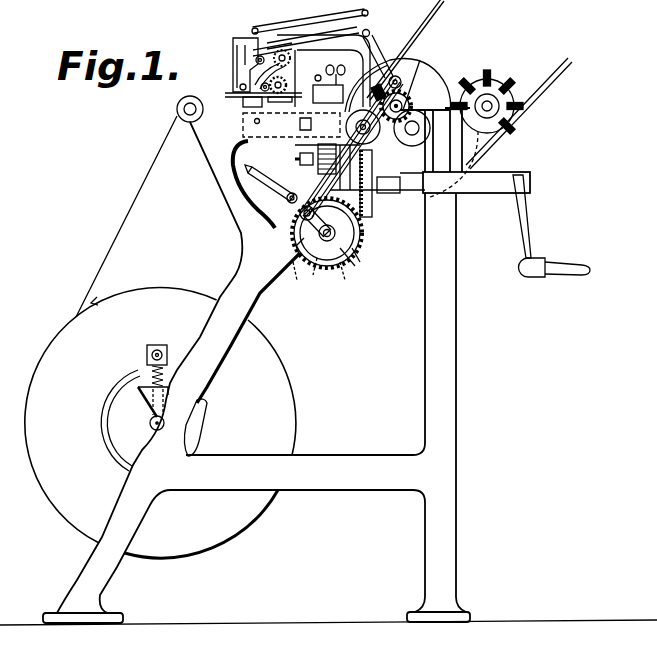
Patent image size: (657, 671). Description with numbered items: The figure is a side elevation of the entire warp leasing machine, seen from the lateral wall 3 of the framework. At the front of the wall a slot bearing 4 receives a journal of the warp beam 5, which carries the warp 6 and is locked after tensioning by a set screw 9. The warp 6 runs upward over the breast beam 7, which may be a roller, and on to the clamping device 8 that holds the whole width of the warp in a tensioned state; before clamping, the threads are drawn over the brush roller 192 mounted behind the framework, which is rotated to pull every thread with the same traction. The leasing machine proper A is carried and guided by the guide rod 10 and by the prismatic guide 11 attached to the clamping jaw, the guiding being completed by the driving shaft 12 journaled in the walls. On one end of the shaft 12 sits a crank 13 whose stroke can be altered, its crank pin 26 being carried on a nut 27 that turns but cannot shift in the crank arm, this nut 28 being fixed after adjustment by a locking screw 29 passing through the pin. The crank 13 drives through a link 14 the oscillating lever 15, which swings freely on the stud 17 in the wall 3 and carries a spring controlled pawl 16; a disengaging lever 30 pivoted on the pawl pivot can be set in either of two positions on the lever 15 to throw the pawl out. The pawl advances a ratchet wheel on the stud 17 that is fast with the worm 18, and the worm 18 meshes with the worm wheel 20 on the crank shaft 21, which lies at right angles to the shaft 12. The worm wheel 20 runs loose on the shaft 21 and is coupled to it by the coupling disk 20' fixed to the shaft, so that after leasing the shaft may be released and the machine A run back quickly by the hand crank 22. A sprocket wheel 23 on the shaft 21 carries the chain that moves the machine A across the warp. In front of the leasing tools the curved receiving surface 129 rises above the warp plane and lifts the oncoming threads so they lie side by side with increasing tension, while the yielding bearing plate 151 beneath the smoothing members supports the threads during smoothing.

The lateral wall 3 is at (243, 243).
The slot bearings 4 is at (138, 398).
The warp beam 5 is at (172, 289).
The warp 6 is at (202, 97).
The breast beam 7 is at (177, 109).
The clamping device 8 is at (316, 79).
The set screws 9 is at (147, 348).
The guide rod 10 is at (387, 200).
The prismatic guide 11 is at (300, 124).
The driving shaft 12 is at (500, 126).
The crank 13 is at (390, 36).
The link 14 is at (364, 236).
The oscillating lever 15 is at (300, 258).
The spring controlled pawl 16 is at (260, 210).
The stud 17 is at (352, 266).
The worm 18 is at (318, 278).
The worm wheel 20 is at (300, 159).
The coupling disk 20' is at (373, 264).
The crank shaft 21 is at (427, 196).
The crank 22 is at (532, 232).
The sprocket wheel 23 is at (373, 220).
The crank pin 26 is at (437, 80).
The nut 27 is at (492, 75).
The nut 28 is at (462, 80).
The locking screw 29 is at (408, 87).
The disengaging lever 30 is at (240, 177).
The curved receiving surface 129 is at (243, 100).
The bearing plate 151 is at (256, 103).
The brush roller 192 is at (511, 77).
The warp leasing machine A is at (310, 34).